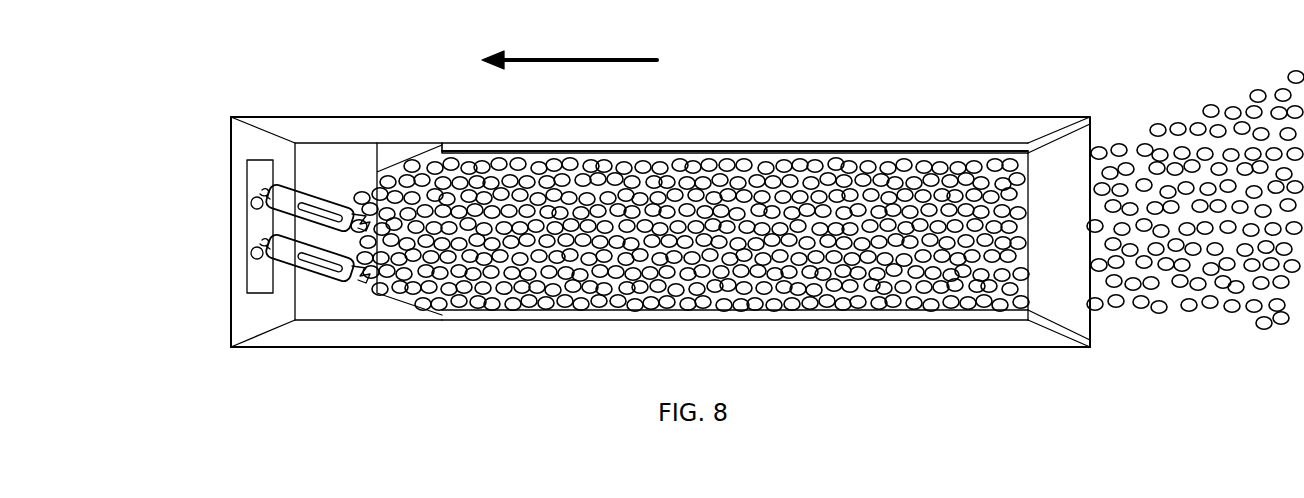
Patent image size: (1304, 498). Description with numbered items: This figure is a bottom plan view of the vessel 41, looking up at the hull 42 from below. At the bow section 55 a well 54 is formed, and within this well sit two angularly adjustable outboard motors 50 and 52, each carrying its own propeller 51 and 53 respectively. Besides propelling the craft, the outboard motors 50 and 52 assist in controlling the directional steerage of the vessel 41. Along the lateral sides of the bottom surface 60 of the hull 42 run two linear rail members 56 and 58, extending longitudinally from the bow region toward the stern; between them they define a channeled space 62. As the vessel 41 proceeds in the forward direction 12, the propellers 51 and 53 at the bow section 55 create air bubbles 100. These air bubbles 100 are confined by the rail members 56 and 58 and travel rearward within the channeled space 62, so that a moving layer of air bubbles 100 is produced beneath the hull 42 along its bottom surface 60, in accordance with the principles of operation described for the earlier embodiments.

The forward direction 12 is at (573, 57).
The vessel 41 is at (913, 103).
The hull 42 is at (547, 325).
The outboard motor 50 is at (336, 280).
The propeller 51 is at (372, 295).
The outboard motor 52 is at (292, 182).
The propeller 53 is at (365, 200).
The well 54 is at (303, 280).
The bow section 55 is at (257, 120).
The linear rail member 56 is at (767, 143).
The linear rail member 58 is at (827, 323).
The bottom surface 60 is at (955, 180).
The channeled space 62 is at (672, 202).
The air bubbles 100 is at (1200, 333).